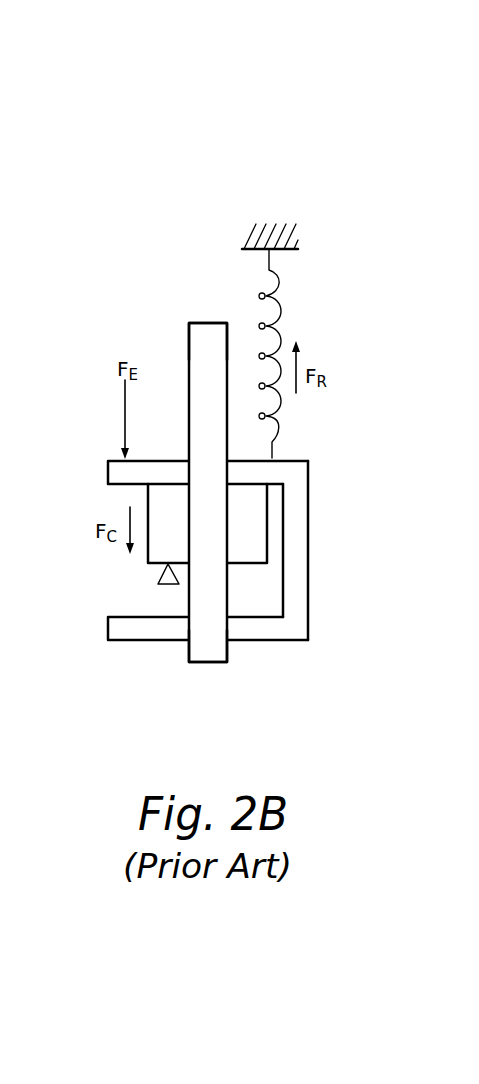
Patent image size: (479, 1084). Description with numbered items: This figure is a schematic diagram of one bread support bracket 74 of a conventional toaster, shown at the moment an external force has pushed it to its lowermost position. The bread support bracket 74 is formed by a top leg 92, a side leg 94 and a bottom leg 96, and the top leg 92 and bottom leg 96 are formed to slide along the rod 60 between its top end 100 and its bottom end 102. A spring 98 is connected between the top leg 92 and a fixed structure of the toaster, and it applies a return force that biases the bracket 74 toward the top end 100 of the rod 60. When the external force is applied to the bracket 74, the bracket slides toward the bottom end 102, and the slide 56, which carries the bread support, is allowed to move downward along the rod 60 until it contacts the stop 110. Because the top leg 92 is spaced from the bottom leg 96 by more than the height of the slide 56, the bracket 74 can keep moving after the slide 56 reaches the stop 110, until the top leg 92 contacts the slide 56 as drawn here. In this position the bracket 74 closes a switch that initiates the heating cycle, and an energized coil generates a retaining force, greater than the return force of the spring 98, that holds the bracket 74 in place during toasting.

The bread support bracket 74 is at (184, 554).
The top leg 92 is at (117, 460).
The side leg 94 is at (298, 548).
The bottom leg 96 is at (124, 641).
The slide 56 is at (162, 505).
The stop 110 is at (157, 577).
The rod 60 is at (240, 486).
The top end of the rod 100 is at (205, 322).
The bottom end of the rod 102 is at (204, 664).
The spring 98 is at (278, 282).